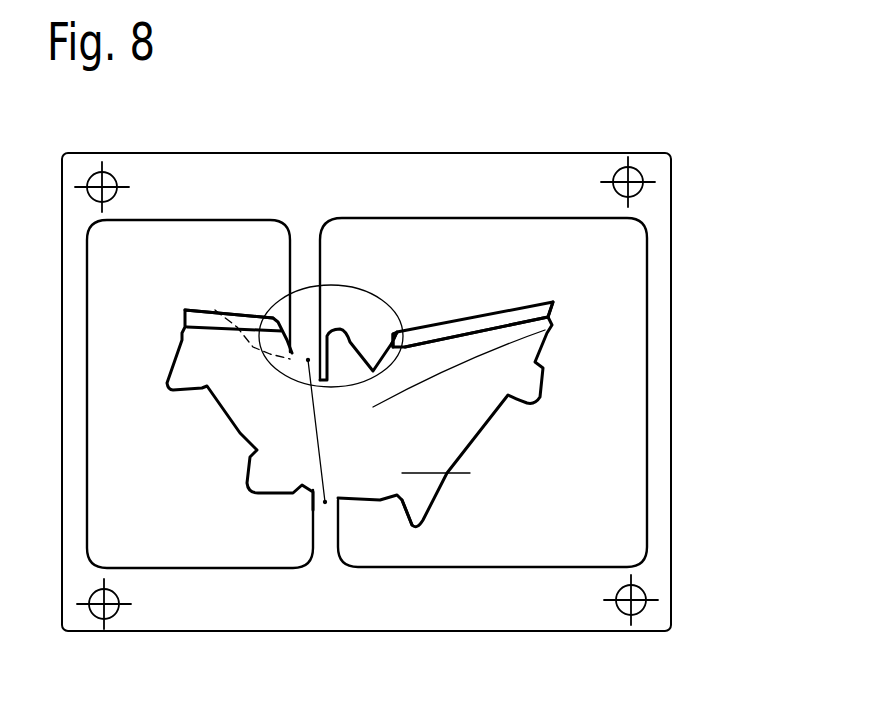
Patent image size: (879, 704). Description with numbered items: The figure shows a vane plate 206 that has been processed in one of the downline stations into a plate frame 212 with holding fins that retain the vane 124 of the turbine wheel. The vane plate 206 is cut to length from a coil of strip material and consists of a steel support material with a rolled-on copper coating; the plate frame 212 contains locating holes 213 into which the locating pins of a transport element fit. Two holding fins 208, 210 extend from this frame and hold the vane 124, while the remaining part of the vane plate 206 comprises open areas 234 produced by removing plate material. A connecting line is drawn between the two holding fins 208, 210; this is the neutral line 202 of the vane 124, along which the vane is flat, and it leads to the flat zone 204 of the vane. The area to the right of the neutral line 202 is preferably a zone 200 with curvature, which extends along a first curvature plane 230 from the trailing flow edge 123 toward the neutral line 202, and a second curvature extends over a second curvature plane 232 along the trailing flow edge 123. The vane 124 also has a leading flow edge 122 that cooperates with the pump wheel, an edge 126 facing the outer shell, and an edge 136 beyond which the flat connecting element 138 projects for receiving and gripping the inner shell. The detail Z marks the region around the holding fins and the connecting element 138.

The leading flow edge 122 is at (230, 312).
The trailing flow edge 123 is at (535, 295).
The vane 124 is at (480, 473).
The edge of the vane 126 is at (378, 503).
The edge of the vane 136 is at (215, 310).
The connecting element 138 is at (393, 310).
The zone with curvature 200 is at (585, 318).
The neutral line 202 is at (323, 455).
The flat zone 204 is at (250, 412).
The vane plate 206 is at (667, 232).
The holding fin 208 is at (305, 325).
The holding fin 210 is at (322, 537).
The plate frame 212 is at (570, 622).
The locating hole 213 is at (647, 592).
The first curvature plane 230 is at (440, 407).
The second curvature plane 232 is at (488, 307).
The open area 234 is at (237, 280).
The detail region Z is at (275, 307).